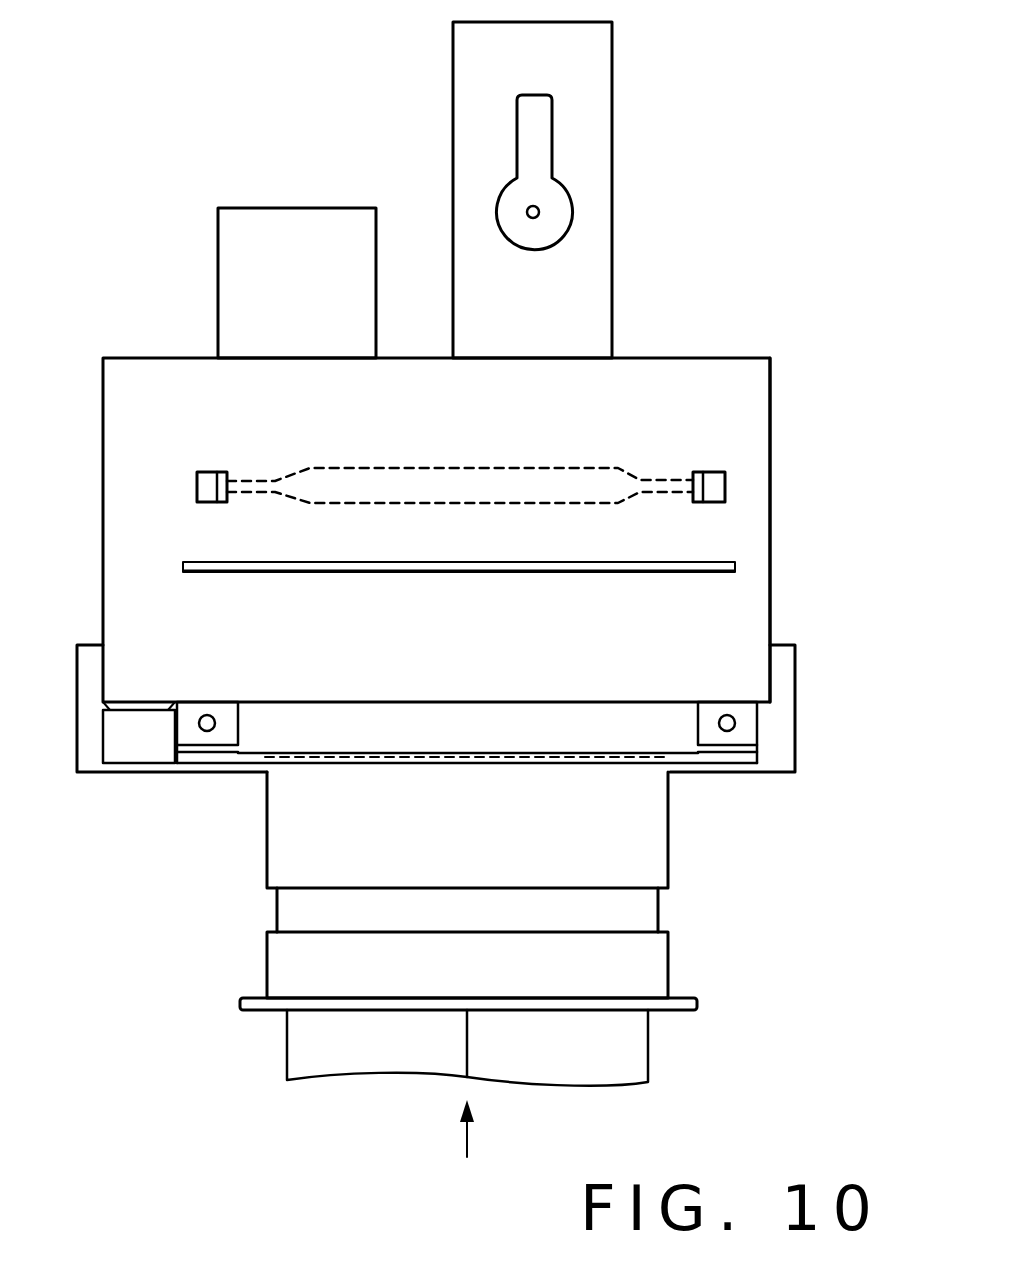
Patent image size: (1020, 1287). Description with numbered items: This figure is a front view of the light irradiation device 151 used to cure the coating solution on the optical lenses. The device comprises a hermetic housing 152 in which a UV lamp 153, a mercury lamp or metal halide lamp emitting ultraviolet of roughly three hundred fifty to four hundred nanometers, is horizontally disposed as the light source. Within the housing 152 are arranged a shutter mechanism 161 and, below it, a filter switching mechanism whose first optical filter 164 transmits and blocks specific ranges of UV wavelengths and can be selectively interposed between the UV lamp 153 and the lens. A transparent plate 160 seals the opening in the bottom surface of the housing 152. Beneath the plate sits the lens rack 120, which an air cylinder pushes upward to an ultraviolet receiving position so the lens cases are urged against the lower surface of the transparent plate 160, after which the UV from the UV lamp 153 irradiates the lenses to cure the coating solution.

The lens rack 120 is at (303, 1085).
The light irradiation device 151 is at (783, 448).
The hermetic housing 152 is at (772, 510).
The UV lamp 153 is at (618, 468).
The transparent plate 160 is at (240, 1003).
The shutter mechanism 161 is at (185, 548).
The first optical filter 164 is at (603, 763).